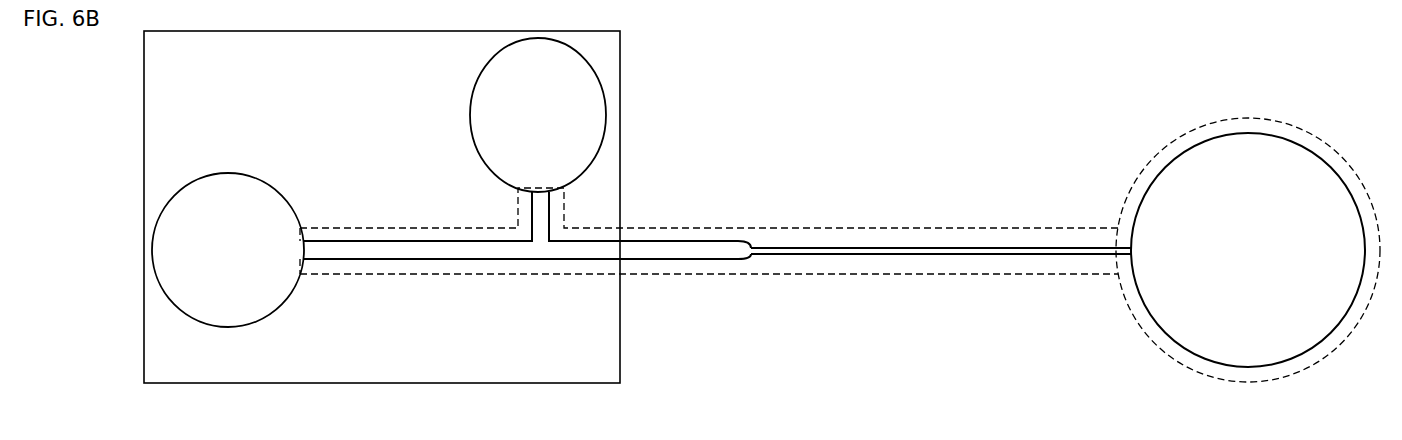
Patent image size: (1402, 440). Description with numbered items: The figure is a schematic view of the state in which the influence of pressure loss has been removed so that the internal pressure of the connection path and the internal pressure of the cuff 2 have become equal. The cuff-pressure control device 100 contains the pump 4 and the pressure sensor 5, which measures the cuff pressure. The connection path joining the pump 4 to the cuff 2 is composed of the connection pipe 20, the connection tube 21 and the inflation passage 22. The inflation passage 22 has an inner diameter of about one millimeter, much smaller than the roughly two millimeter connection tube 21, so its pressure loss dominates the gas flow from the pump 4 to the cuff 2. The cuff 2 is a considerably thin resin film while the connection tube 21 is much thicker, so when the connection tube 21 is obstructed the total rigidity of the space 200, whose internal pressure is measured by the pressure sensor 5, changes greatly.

The cuff-pressure control device 100 is at (620, 68).
The pump 4 is at (228, 327).
The pressure sensor 5 is at (470, 123).
The connection pipe 20 is at (472, 260).
The connection tube 21 is at (686, 261).
The inflation passage 22 is at (933, 255).
The space 200 is at (800, 274).
The cuff 2 is at (1247, 132).